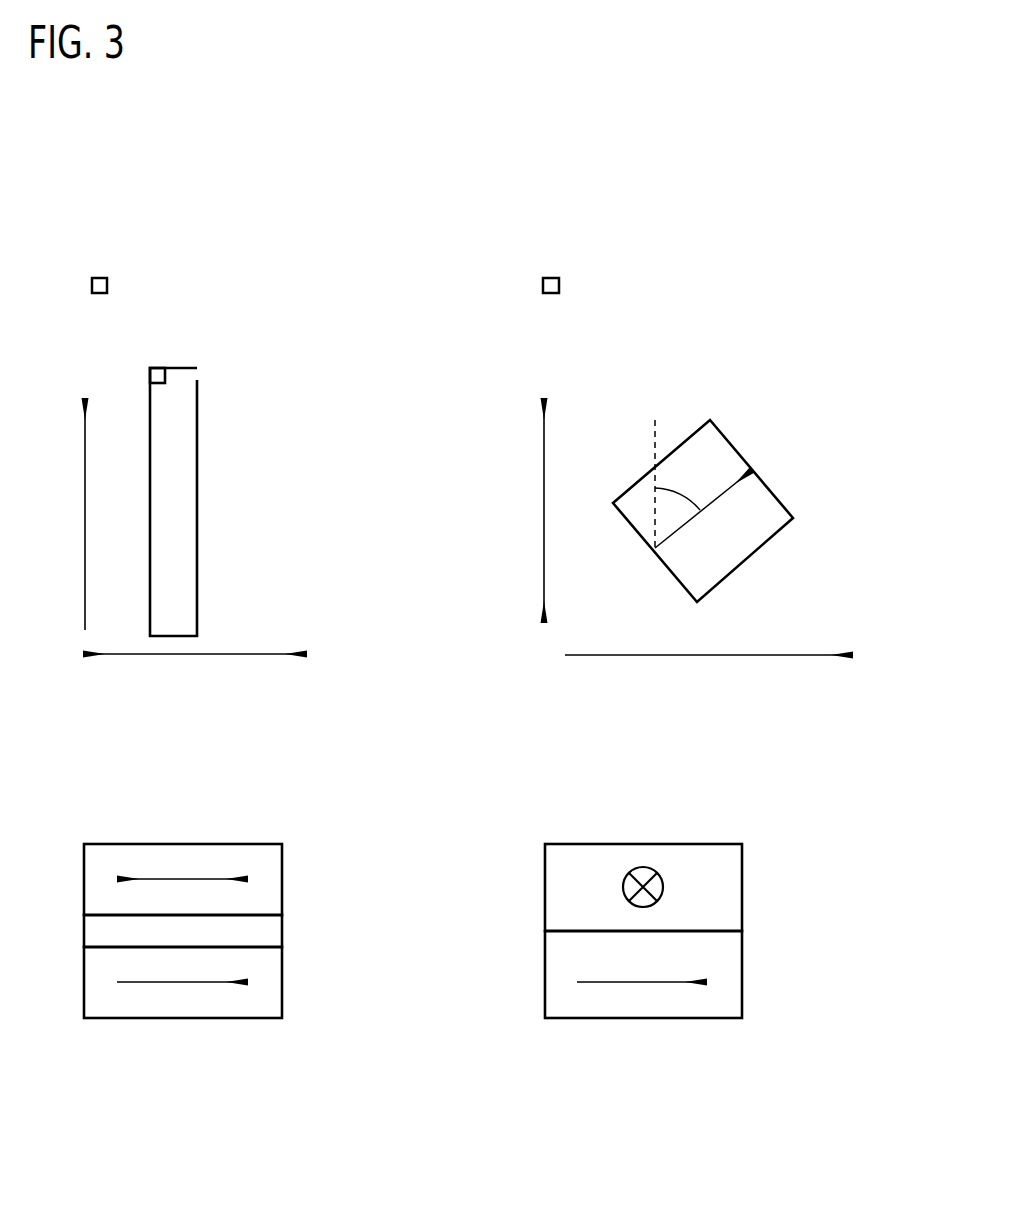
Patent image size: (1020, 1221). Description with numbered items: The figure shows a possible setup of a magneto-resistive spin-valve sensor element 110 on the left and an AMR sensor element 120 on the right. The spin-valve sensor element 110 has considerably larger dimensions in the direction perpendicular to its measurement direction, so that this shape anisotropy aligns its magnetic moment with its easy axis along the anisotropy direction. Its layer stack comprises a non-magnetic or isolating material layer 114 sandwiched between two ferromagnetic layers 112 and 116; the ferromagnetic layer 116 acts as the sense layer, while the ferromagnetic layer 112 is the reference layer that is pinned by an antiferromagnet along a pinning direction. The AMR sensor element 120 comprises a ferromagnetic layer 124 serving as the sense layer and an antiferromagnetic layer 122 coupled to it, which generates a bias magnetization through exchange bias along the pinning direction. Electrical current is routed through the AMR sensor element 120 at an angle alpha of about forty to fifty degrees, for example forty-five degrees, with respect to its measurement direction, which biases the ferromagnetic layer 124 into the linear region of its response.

The magneto-resistive spin-valve sensor element 110 is at (252, 212).
The AMR sensor element 120 is at (702, 212).
The ferromagnetic layer 116 is at (182, 842).
The non-magnetic and/or isolating material layer 114 is at (83, 930).
The ferromagnetic layer 112 is at (183, 1020).
The ferromagnetic layer 124 is at (641, 842).
The antiferromagnetic layer 122 is at (643, 1020).